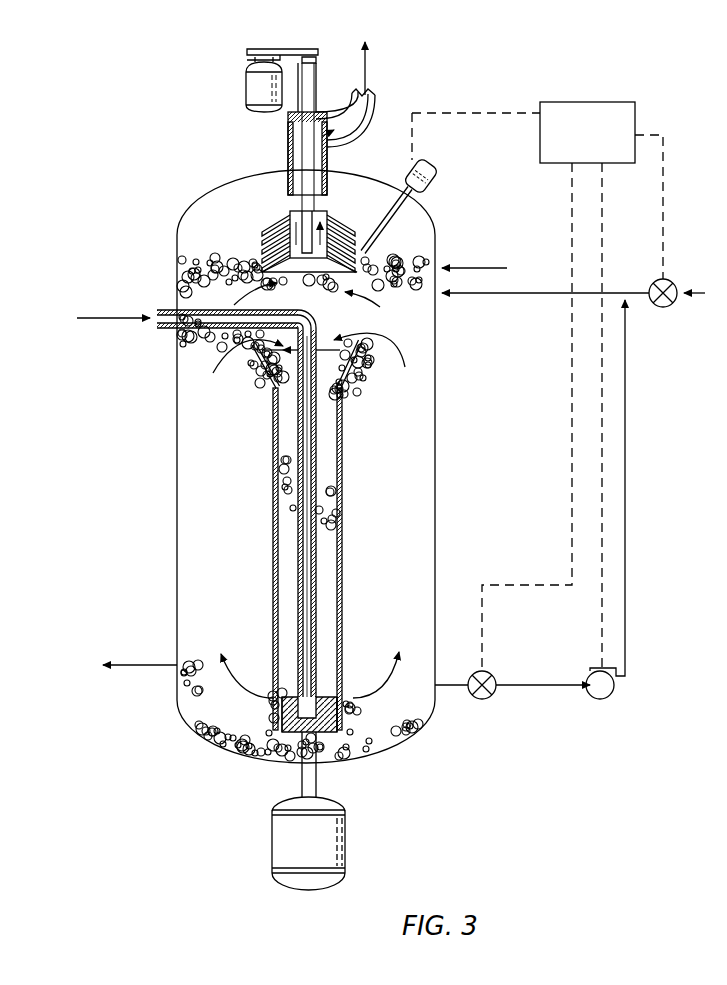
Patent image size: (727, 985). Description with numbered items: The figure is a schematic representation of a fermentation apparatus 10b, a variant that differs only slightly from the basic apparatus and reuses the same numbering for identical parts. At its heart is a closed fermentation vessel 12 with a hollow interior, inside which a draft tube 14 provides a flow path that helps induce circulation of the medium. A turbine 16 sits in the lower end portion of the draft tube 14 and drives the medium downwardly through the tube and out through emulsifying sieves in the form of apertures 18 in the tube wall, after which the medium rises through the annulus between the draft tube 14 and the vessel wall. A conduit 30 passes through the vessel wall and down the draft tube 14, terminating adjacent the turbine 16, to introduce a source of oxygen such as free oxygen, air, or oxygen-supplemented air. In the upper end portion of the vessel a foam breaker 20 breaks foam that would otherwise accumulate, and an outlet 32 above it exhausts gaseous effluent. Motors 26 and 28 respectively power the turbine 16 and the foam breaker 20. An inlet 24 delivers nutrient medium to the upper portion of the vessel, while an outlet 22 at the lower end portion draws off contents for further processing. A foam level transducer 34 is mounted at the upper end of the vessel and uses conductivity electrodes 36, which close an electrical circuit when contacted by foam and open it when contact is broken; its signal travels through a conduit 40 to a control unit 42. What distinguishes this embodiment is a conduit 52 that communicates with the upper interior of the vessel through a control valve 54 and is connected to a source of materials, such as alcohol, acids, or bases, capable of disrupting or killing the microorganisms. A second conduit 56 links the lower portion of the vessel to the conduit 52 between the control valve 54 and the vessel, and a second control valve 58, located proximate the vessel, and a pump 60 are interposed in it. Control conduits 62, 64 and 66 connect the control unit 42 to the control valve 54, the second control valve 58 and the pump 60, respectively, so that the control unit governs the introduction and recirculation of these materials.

The fermentation apparatus 10b is at (187, 178).
The fermentation vessel 12 is at (177, 418).
The draft tube 14 is at (273, 497).
The turbine 16 is at (345, 715).
The apertures 18 is at (282, 704).
The foam breaker 20 is at (262, 240).
The outlet 22 is at (140, 665).
The inlet 24 is at (481, 268).
The motor 26 is at (338, 832).
The motor 28 is at (246, 80).
The conduit 30 is at (158, 310).
The outlet 32 is at (365, 100).
The foam level transducer 34 is at (437, 173).
The conductivity electrodes 36 is at (368, 250).
The conduit 40 is at (500, 112).
The control unit 42 is at (600, 102).
The conduit 52 is at (693, 289).
The control valve 54 is at (657, 283).
The second conduit 56 is at (545, 685).
The second control valve 58 is at (490, 673).
The pump 60 is at (600, 700).
The control conduit 62 is at (666, 166).
The control conduit 64 is at (572, 200).
The control conduit 66 is at (602, 200).